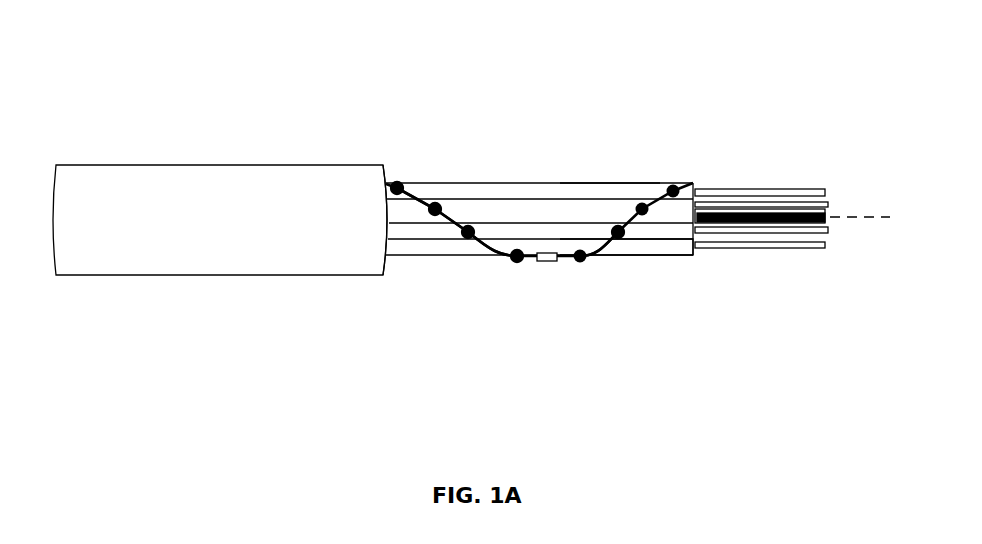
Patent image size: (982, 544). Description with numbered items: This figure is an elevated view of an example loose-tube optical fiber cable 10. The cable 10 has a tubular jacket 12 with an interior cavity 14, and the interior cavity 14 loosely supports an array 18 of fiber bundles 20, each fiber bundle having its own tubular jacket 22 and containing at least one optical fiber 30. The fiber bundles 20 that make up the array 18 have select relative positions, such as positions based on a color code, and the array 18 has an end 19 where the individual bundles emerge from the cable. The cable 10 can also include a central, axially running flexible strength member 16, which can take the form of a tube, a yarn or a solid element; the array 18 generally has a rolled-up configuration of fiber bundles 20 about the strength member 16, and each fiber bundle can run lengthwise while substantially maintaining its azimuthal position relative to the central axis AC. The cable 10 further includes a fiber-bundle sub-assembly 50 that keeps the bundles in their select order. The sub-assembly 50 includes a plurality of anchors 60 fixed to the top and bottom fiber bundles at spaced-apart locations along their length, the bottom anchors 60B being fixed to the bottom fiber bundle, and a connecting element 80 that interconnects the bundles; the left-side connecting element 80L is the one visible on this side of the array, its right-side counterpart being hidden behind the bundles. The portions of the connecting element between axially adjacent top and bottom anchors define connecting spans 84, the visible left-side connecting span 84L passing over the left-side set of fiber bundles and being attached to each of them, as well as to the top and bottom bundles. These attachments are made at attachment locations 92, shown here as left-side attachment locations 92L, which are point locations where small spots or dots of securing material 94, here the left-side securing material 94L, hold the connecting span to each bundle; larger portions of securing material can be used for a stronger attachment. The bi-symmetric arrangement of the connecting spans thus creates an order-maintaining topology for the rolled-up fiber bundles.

The loose-tube optical fiber cable 10 is at (470, 185).
The tubular jacket 12 is at (110, 175).
The interior cavity 14 is at (391, 179).
The strength member 16 is at (788, 223).
The array 18 is at (670, 170).
The end 19 is at (776, 267).
The fiber bundles 20 is at (532, 243).
The tubular jacket 22 is at (645, 245).
The optical fiber 30 is at (753, 248).
The fiber-bundle sub-assembly 50 is at (602, 158).
The anchors 60 is at (592, 282).
The bottom anchors 60B is at (547, 262).
The connecting element 80 is at (405, 136).
The left-side connecting element 80L is at (423, 186).
The connecting spans 84 is at (542, 204).
The left-side connecting span 84L is at (633, 235).
The attachment locations 92 is at (386, 273).
The left-side attachment locations 92L is at (457, 239).
The securing material 94 is at (412, 122).
The left-side securing material 94L is at (431, 219).
The central axis AC is at (863, 215).